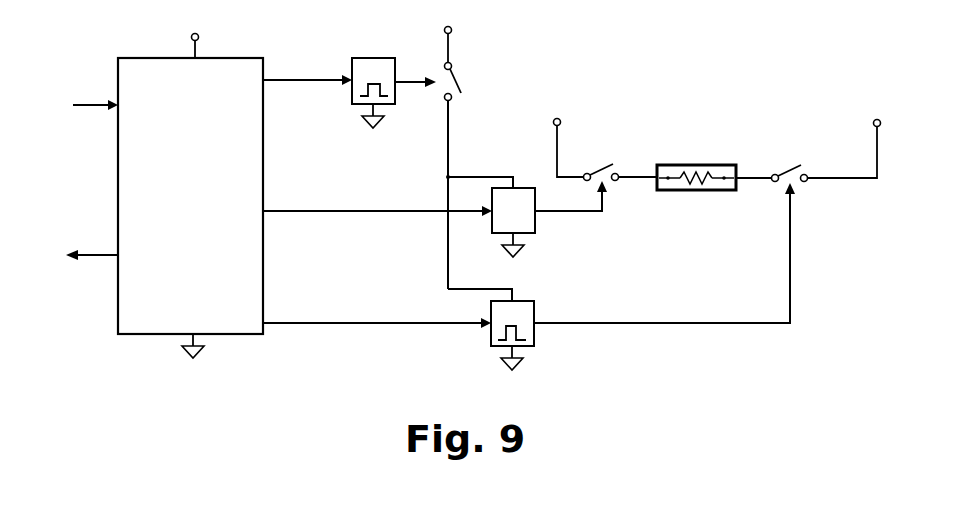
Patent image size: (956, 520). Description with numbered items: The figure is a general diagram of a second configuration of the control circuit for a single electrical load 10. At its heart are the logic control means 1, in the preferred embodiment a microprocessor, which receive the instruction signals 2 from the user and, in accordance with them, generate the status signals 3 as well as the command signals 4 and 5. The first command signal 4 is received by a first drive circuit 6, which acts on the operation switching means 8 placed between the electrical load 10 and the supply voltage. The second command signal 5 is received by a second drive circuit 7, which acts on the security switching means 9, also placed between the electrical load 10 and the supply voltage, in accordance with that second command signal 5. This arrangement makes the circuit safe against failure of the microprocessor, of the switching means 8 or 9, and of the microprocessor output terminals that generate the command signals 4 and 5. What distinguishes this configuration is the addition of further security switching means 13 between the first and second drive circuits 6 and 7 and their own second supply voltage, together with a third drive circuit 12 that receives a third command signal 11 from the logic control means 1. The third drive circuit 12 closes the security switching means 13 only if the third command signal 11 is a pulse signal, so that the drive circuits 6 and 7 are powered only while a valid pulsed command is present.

The logic control means 1 is at (190, 191).
The instruction signals 2 is at (86, 93).
The status signals 3 is at (84, 233).
The first command signal 4 is at (285, 195).
The second command signal 5 is at (285, 310).
The first drive circuit 6 is at (549, 219).
The second drive circuit 7 is at (643, 276).
The operation switching means 8 is at (603, 140).
The security switching means 9 is at (831, 140).
The electrical load 10 is at (714, 167).
The third command signal 11 is at (285, 68).
The third drive circuit 12 is at (394, 93).
The security switching means 13 is at (467, 153).